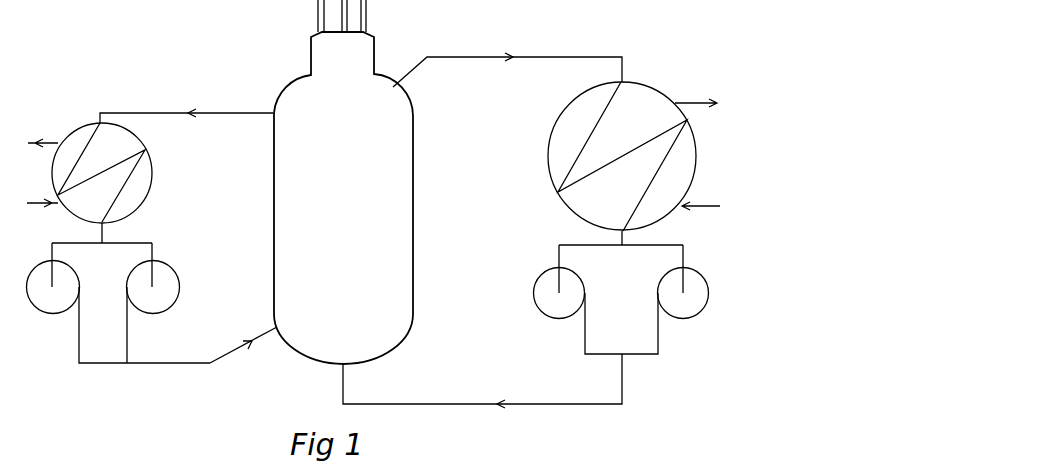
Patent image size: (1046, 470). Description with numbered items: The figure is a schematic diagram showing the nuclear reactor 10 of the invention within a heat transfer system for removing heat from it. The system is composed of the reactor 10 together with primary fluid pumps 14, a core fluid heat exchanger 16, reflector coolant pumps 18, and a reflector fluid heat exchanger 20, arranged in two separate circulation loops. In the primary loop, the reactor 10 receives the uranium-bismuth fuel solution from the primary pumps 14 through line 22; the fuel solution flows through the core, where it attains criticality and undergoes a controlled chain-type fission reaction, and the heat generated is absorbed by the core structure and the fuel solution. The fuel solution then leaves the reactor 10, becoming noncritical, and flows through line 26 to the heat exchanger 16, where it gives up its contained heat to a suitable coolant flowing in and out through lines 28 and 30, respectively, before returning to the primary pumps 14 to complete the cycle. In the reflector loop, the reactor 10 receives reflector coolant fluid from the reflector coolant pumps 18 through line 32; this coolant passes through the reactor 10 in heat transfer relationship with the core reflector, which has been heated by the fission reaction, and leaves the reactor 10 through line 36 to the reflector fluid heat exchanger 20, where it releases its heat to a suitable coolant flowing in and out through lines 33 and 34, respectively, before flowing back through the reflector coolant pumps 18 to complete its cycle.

The nuclear reactor 10 is at (351, 186).
The primary fluid pumps 14 is at (668, 272).
The core fluid heat exchanger 16 is at (548, 156).
The reflector coolant pumps 18 is at (137, 306).
The reflector fluid heat exchanger 20 is at (149, 153).
The line 22 is at (564, 406).
The line 26 is at (455, 58).
The line 28 is at (712, 207).
The line 30 is at (693, 107).
The line 32 is at (233, 352).
The line 33 is at (40, 204).
The line 34 is at (49, 141).
The line 36 is at (220, 113).